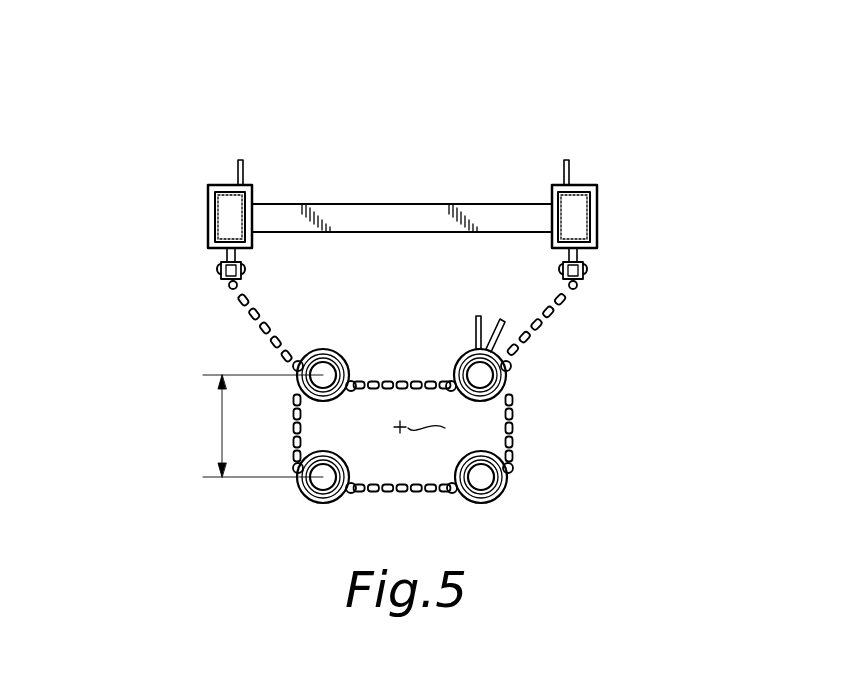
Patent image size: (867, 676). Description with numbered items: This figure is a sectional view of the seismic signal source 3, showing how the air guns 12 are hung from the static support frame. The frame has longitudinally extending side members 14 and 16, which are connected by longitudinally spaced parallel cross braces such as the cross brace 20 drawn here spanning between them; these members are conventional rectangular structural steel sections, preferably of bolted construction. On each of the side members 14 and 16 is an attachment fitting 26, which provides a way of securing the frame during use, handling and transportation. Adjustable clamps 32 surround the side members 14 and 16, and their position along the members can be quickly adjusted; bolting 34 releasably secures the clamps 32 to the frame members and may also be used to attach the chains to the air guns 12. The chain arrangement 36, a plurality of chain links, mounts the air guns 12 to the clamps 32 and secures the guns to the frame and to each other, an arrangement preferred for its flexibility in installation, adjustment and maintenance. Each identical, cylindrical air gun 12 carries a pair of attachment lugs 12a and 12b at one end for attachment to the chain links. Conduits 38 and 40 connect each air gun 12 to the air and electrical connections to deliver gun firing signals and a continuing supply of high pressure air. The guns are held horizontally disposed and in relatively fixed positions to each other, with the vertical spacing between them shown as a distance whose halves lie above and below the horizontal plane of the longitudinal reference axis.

The seismic signal source 3 is at (494, 144).
The air gun 12 is at (485, 488).
The attachment lug 12a is at (452, 491).
The attachment lug 12b is at (513, 468).
The side member 14 is at (597, 210).
The side member 16 is at (208, 203).
The cross brace 20 is at (347, 205).
The attachment fitting 26 is at (570, 165).
The adjustable clamp 32 is at (209, 233).
The bolting 34 is at (220, 275).
The chain arrangement 36 is at (384, 378).
The conduit 38 is at (476, 330).
The conduit 40 is at (503, 322).